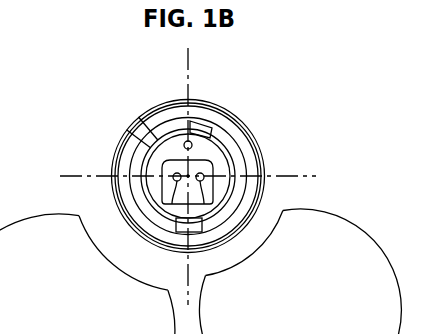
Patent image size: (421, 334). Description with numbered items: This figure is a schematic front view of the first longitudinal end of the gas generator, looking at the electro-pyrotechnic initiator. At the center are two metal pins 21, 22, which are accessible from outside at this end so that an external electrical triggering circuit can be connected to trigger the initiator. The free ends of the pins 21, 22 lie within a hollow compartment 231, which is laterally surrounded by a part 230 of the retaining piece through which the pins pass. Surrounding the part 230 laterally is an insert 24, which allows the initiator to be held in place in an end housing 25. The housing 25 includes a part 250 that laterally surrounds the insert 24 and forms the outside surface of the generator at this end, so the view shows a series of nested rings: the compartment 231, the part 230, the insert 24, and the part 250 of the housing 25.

The metal pin 21 is at (92, 238).
The metal pin 22 is at (257, 236).
The insert 24 is at (212, 121).
The end housing 25 is at (288, 218).
The part 230 is at (170, 127).
The hollow compartment 231 is at (218, 165).
The part 250 is at (262, 245).